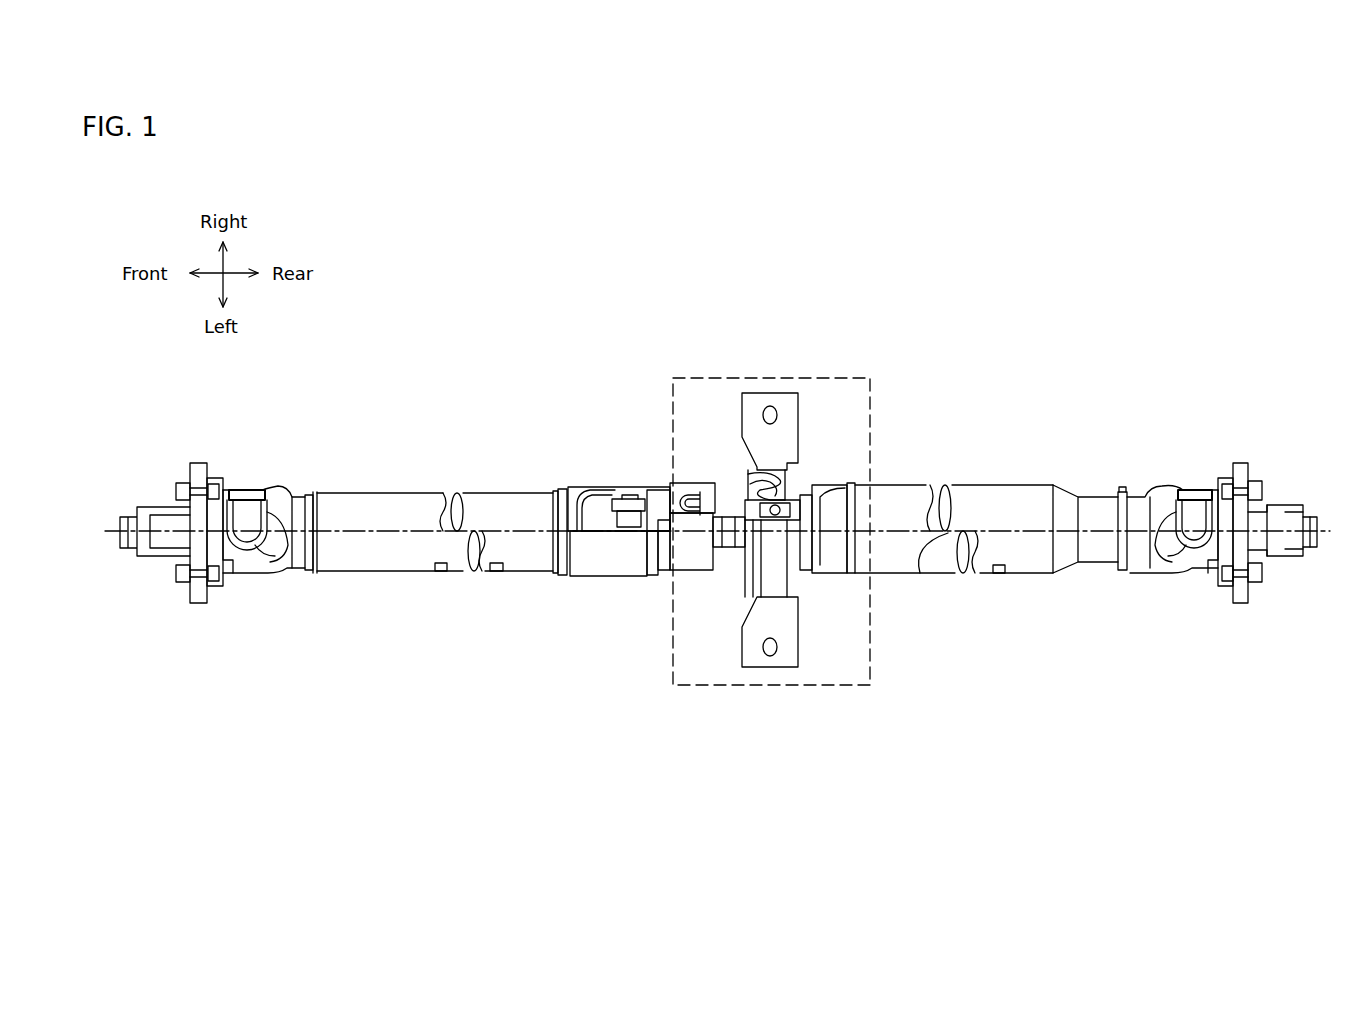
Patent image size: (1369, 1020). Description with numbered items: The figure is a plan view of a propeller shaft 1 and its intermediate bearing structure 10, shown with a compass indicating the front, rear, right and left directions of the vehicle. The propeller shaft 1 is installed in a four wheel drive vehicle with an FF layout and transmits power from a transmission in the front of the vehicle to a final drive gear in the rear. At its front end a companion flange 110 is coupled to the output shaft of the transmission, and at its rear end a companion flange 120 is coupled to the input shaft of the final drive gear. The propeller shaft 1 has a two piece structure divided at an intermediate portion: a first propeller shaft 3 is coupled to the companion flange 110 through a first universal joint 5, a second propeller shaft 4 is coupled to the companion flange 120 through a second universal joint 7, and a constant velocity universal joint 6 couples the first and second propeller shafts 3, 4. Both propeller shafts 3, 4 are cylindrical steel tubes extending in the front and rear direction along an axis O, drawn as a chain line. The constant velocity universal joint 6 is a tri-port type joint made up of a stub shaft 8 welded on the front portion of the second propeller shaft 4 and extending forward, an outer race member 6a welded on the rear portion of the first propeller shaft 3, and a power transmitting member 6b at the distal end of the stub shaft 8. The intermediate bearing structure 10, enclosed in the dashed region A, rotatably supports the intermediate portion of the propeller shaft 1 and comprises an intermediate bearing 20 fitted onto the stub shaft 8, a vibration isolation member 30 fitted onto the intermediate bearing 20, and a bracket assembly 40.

The propeller shaft 1 is at (1002, 319).
The first propeller shaft 3 is at (387, 484).
The second propeller shaft 4 is at (1018, 481).
The first universal joint 5 is at (252, 479).
The constant velocity universal joint 6 is at (633, 592).
The outer race member 6a is at (598, 565).
The power transmitting member 6b is at (621, 488).
The second universal joint 7 is at (1205, 470).
The stub shaft 8 is at (692, 528).
The intermediate bearing structure 10 is at (815, 421).
The intermediate bearing 20 is at (779, 530).
The vibration isolation member 30 is at (744, 460).
The bracket assembly 40 is at (736, 634).
The companion flange 110 is at (157, 488).
The companion flange 120 is at (1293, 490).
The center support region A is at (784, 376).
The axis O is at (918, 578).